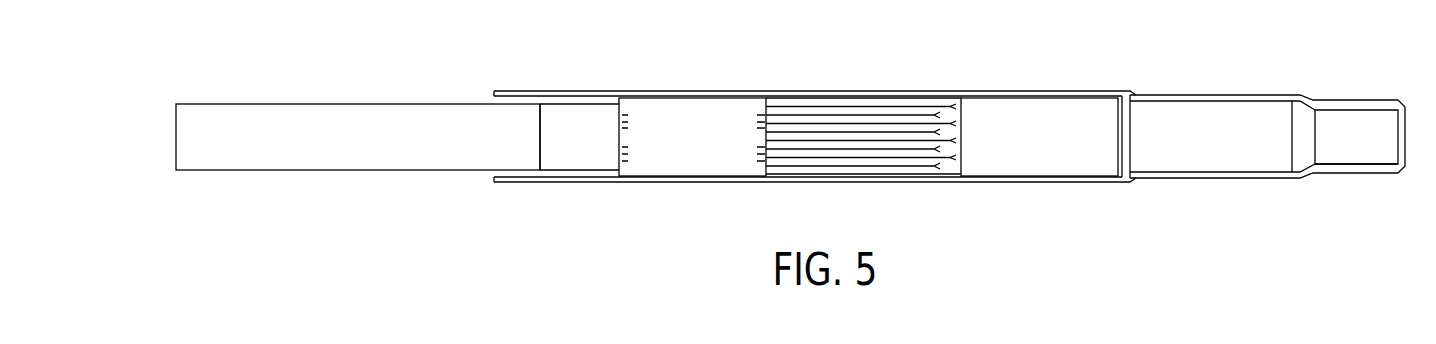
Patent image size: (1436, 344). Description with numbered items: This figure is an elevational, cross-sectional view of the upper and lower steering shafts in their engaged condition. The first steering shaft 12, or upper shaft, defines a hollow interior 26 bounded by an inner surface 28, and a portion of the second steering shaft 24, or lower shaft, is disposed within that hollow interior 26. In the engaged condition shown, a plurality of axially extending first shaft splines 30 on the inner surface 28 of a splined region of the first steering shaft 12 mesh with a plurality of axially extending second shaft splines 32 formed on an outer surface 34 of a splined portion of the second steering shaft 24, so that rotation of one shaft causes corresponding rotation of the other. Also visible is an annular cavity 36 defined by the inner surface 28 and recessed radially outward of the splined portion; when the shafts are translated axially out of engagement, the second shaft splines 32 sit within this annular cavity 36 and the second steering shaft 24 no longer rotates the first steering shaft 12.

The first steering shaft 12 is at (1202, 98).
The second steering shaft 24 is at (405, 112).
The hollow interior 26 is at (1375, 122).
The inner surface 28 is at (1338, 158).
The first shaft splines 30 is at (852, 122).
The second shaft splines 32 is at (692, 112).
The outer surface 34 is at (555, 104).
The annular cavity 36 is at (1074, 112).